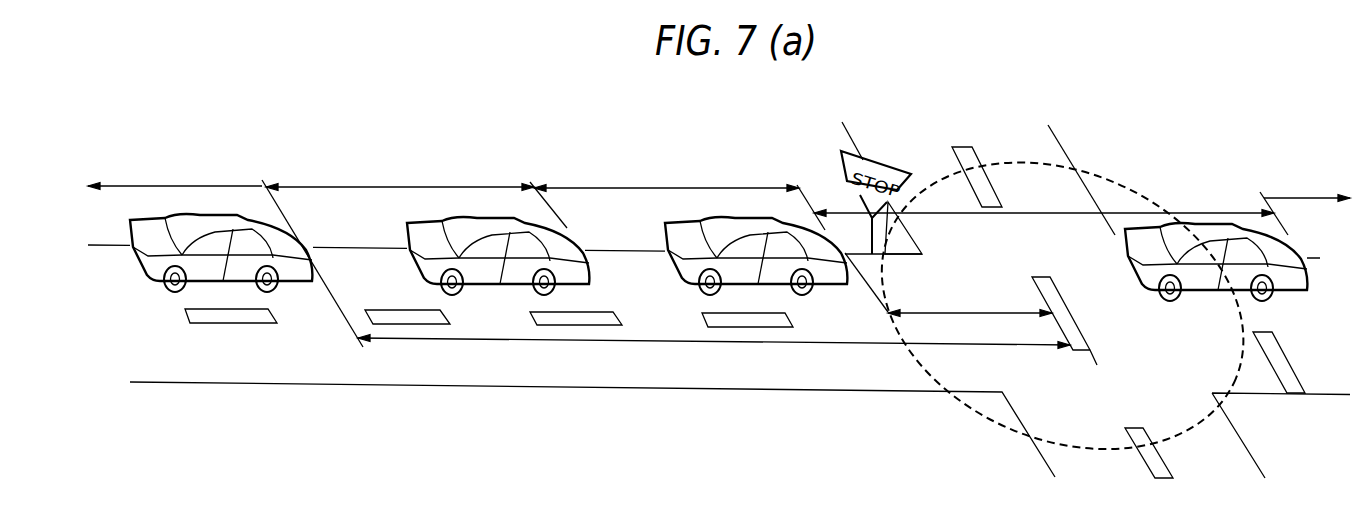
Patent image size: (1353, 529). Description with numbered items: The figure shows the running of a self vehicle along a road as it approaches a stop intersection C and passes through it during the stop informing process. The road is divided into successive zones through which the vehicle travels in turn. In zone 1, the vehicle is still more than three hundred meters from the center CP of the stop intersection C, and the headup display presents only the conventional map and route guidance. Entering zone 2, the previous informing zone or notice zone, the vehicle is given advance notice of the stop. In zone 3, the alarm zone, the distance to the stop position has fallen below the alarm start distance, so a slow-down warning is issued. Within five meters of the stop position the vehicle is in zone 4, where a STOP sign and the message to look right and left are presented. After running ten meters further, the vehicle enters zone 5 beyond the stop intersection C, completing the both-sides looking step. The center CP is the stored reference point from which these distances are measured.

The zone 1 is at (225, 250).
The zone 2 is at (427, 208).
The zone 3 is at (690, 209).
The zone 4 is at (816, 274).
The zone 5 is at (1237, 233).
The center of the stop intersection CP is at (1063, 313).
The stop intersection C is at (983, 415).